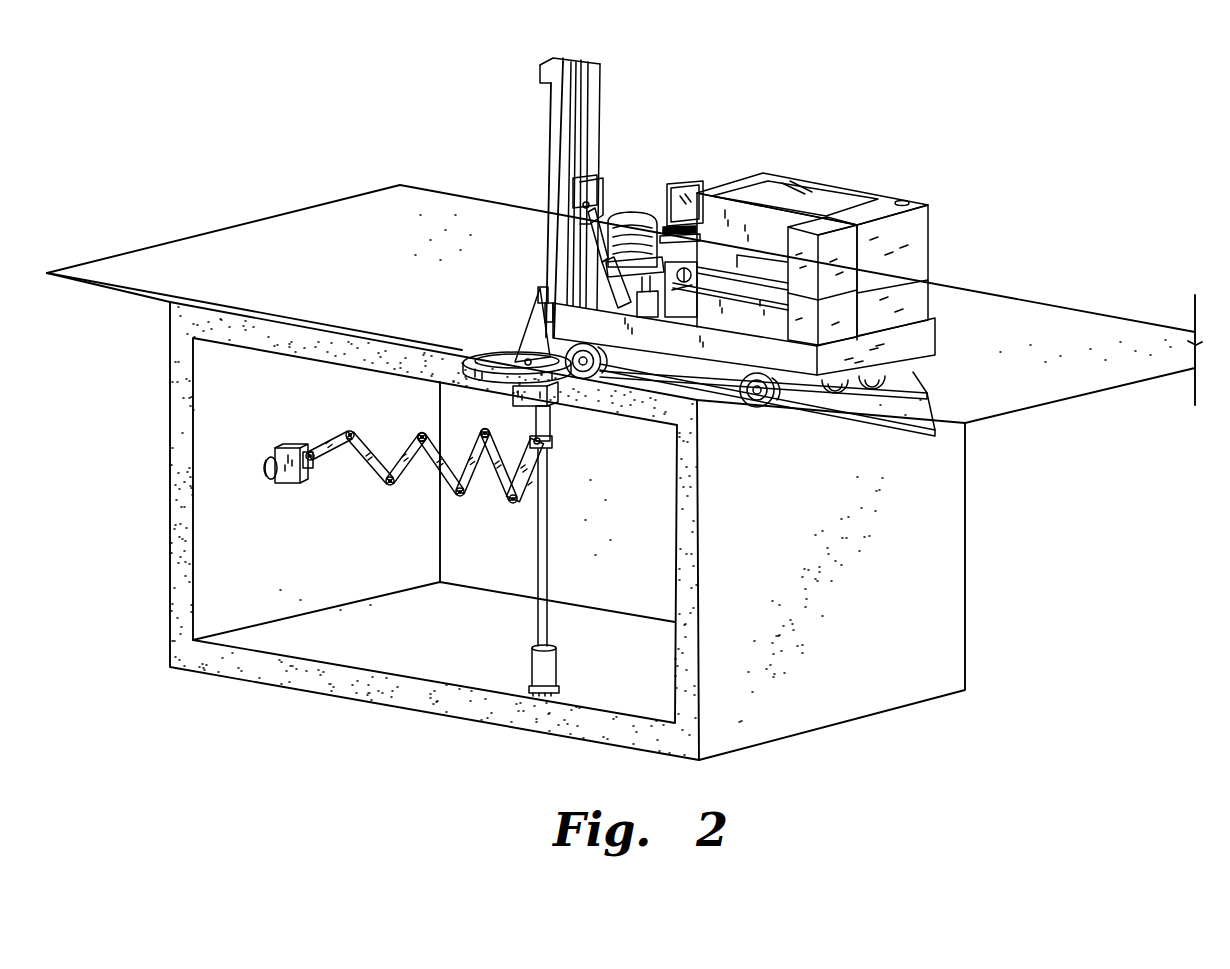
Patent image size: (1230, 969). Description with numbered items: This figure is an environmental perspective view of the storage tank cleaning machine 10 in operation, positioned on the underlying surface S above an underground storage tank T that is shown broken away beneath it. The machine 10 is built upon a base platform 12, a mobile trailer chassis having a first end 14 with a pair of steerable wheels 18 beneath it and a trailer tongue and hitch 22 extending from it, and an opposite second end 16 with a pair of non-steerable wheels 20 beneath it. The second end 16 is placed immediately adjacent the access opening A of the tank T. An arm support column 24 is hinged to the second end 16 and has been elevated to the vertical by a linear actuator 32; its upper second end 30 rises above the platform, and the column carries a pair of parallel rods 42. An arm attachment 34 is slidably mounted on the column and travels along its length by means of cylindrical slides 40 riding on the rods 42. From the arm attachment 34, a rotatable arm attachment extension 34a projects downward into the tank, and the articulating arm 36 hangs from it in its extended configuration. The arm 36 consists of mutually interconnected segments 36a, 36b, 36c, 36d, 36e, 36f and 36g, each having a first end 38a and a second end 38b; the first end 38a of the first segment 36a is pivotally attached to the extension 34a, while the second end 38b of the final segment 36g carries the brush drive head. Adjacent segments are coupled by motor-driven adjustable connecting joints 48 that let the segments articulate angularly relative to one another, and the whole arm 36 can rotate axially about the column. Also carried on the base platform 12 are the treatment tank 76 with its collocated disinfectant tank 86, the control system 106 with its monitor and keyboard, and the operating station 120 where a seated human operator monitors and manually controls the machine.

The storage tank cleaning machine 10 is at (940, 105).
The base platform 12 is at (733, 400).
The first end 14 is at (940, 333).
The second end 16 is at (543, 302).
The steerable wheels 18 is at (905, 392).
The non-steerable wheels 20 is at (610, 386).
The trailer tongue and hitch 22 is at (913, 430).
The arm support column 24 is at (576, 184).
The second end 30 is at (592, 57).
The linear actuator 32 is at (617, 303).
The arm attachment 34 is at (527, 333).
The arm attachment extension 34a is at (553, 413).
The articulating arm 36 is at (395, 423).
The first arm segment 36a is at (538, 473).
The arm segment 36b is at (503, 480).
The arm segment 36c is at (478, 492).
The arm segment 36d is at (435, 470).
The arm segment 36e is at (410, 495).
The arm segment 36f is at (363, 462).
The final arm segment 36g is at (337, 462).
The first end 38a is at (551, 443).
The second end 38b is at (313, 452).
The cylindrical slides 40 is at (535, 312).
The parallel rods 42 is at (546, 150).
The adjustable connecting joint 48 is at (483, 432).
The treatment tank 76 is at (873, 188).
The disinfectant tank 86 is at (930, 217).
The control system 106 is at (695, 183).
The operating station 120 is at (637, 195).
The underlying surface S is at (1089, 348).
The storage tank T is at (788, 585).
The access opening A is at (504, 350).